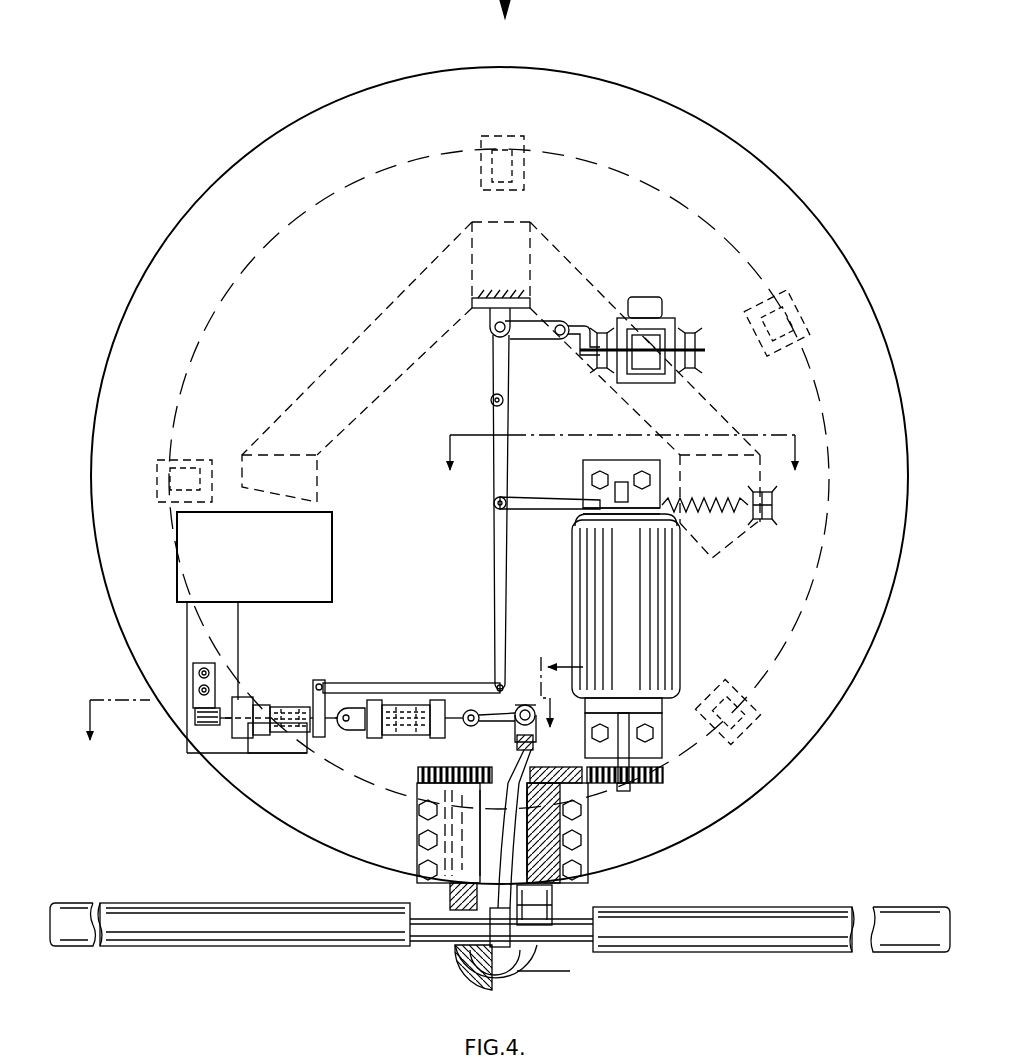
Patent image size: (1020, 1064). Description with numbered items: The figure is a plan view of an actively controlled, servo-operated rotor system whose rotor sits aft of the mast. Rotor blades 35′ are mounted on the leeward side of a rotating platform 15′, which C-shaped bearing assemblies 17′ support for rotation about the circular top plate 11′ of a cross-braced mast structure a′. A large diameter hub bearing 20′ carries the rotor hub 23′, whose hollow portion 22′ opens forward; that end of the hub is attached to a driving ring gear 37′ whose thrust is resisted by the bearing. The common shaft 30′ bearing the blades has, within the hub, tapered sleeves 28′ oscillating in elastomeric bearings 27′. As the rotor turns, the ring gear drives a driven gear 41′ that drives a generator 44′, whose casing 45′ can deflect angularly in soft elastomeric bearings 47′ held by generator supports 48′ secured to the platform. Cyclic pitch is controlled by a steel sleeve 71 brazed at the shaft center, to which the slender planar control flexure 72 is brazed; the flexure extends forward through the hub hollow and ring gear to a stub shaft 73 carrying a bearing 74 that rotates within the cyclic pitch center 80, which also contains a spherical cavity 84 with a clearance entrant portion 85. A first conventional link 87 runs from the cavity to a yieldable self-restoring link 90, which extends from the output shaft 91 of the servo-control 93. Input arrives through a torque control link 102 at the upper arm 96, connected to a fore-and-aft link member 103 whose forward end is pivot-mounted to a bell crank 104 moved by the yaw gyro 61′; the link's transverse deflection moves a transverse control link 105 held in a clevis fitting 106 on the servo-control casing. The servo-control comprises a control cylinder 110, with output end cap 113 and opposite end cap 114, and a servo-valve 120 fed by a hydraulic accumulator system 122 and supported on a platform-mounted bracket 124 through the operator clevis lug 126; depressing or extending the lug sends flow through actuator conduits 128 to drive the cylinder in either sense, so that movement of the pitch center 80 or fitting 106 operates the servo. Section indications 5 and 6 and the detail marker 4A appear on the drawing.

The rotating platform 15′ is at (378, 88).
The circular top plate 11′ is at (650, 188).
The C-shaped bearing assemblies 17′ is at (527, 181).
The cross-braced mast structure a′ is at (398, 293).
The yaw gyro 61′ is at (676, 313).
The bell crank 104 is at (494, 352).
The fore-and-aft link member 103 is at (494, 563).
The torque control link 102 is at (506, 512).
The section line 6- 6 is at (623, 472).
The upper arm 96 is at (621, 474).
The soft elastomeric bearings 47′ is at (591, 487).
The generator supports 48′ is at (661, 487).
The generator 44′ is at (663, 648).
The generator casing 45′ is at (652, 562).
The hydraulic accumulator system 122 is at (340, 543).
The section line 5- 5 is at (323, 720).
The platform-mounted bracket 124 is at (197, 712).
The operator clevis lug 126 is at (212, 734).
The servo-valve 120 is at (246, 758).
The actuator conduits 128 is at (248, 696).
The end cap 114 is at (277, 740).
The servo-control 93 is at (300, 703).
The control cylinder 110 is at (302, 758).
The clevis fitting or lug 106 is at (320, 682).
The transverse control link 105 is at (413, 683).
The output shaft 91 is at (352, 729).
The output end cap 113 is at (326, 739).
The yieldable self-restoring link 90 is at (403, 700).
The clearance entrant portion 85 is at (515, 726).
The first conventional link 87 is at (493, 715).
The cyclic pitch center 80 is at (531, 701).
The spherical cavity 84 is at (519, 702).
The bearing 74 is at (533, 746).
The stub shaft 73 is at (513, 763).
The control flexure 72 is at (530, 954).
The driving ring gear 37′ is at (420, 777).
The driven gear 41′ is at (657, 786).
The hub bearing 20′ is at (590, 858).
The hollow portion 22′ is at (520, 830).
The tapered sleeves 28′ is at (455, 903).
The rotor hub 23′ is at (571, 919).
The steel sleeve 71 is at (500, 990).
The common shaft 30′ is at (428, 948).
The elastomeric bearings 27′ is at (463, 948).
The rotor blades 35′ is at (252, 931).
The view arrow 4A is at (570, 827).